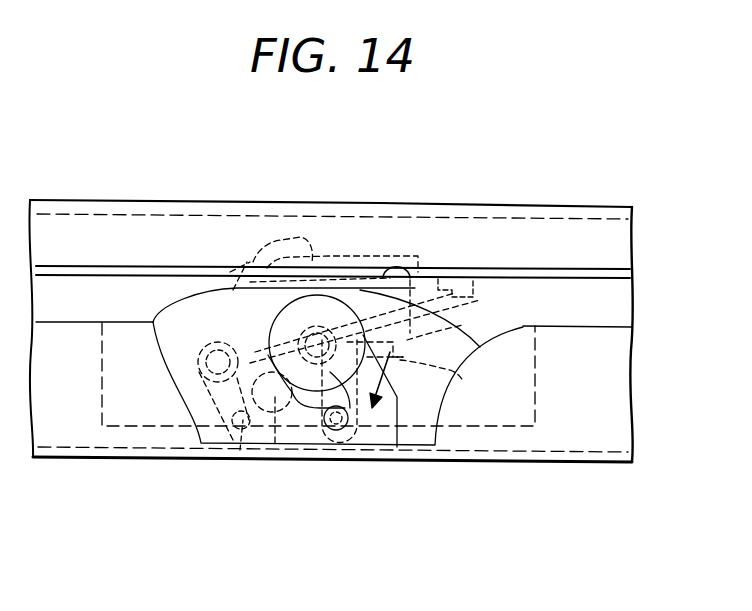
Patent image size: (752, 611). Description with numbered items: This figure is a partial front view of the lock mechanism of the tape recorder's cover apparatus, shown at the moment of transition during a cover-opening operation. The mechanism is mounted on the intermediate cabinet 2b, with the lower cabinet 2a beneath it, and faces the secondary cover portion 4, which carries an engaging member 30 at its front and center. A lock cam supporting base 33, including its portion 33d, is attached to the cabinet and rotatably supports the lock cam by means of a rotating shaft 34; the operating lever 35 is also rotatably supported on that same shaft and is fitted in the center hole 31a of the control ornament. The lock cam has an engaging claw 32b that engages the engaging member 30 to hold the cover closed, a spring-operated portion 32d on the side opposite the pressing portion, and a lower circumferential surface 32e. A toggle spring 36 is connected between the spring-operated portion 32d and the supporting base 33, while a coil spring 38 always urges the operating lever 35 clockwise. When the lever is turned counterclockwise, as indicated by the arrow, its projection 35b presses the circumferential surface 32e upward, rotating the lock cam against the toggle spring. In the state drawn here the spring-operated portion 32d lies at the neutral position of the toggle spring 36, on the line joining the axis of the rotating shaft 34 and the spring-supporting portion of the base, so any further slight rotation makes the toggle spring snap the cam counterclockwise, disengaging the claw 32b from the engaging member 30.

The lower cartridge half 2a is at (585, 433).
The intermediate cabinet 2b is at (542, 294).
The secondary cover portion 4 is at (592, 203).
The engaging member 30 is at (360, 214).
The center hole 31a is at (309, 447).
The engaging claw 32b is at (279, 228).
The spring-operated portion 32d is at (273, 447).
The lower circumferential surface 32e is at (480, 347).
The lock cam supporting base 33 is at (523, 430).
The housing projection 33d is at (240, 450).
The rotating shaft 34 is at (318, 335).
The operating lever 35 is at (345, 441).
The projection 35b is at (400, 352).
The toggle spring 36 is at (193, 352).
The spring 38 is at (300, 326).